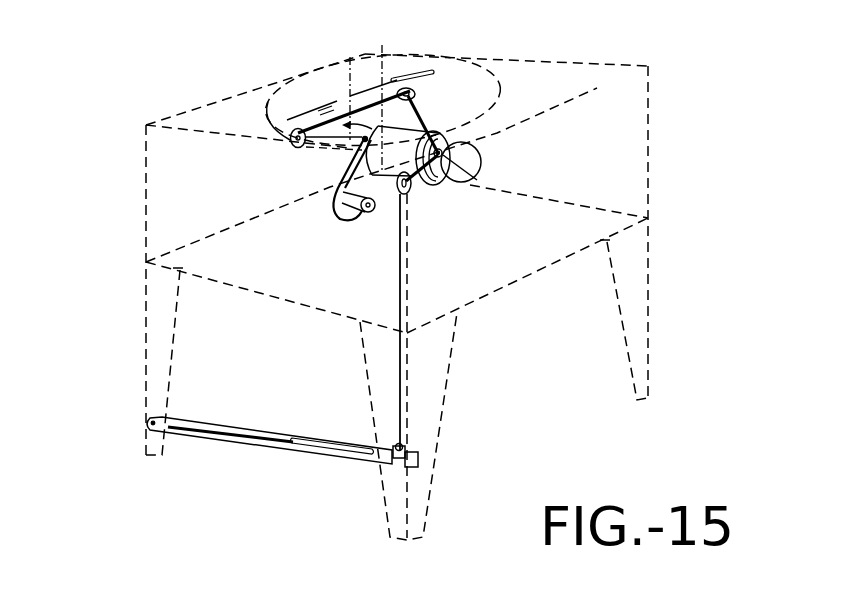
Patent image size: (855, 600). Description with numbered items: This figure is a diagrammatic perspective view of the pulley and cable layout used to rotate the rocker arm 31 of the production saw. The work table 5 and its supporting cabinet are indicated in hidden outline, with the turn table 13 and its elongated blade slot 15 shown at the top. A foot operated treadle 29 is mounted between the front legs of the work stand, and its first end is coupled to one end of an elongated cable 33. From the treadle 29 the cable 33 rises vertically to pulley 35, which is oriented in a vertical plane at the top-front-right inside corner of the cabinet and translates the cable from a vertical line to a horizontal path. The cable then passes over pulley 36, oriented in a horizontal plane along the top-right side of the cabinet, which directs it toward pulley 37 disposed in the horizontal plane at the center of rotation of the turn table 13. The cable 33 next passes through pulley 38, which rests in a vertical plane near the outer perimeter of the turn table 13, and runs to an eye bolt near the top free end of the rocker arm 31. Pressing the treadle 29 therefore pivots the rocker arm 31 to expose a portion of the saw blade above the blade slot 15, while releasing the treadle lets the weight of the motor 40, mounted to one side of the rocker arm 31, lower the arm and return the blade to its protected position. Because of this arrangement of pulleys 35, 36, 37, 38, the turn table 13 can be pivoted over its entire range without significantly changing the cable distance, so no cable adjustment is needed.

The work table 5 is at (597, 88).
The turn table 13 is at (330, 88).
The blade slot 15 is at (360, 52).
The foot treadle 29 is at (290, 445).
The rocker arm 31 is at (338, 178).
The elongated cable 33 is at (400, 313).
The pulley 35 is at (417, 188).
The pulley 36 is at (470, 182).
The pulley 37 is at (413, 92).
The pulley 38 is at (290, 142).
The motor 40 is at (483, 170).